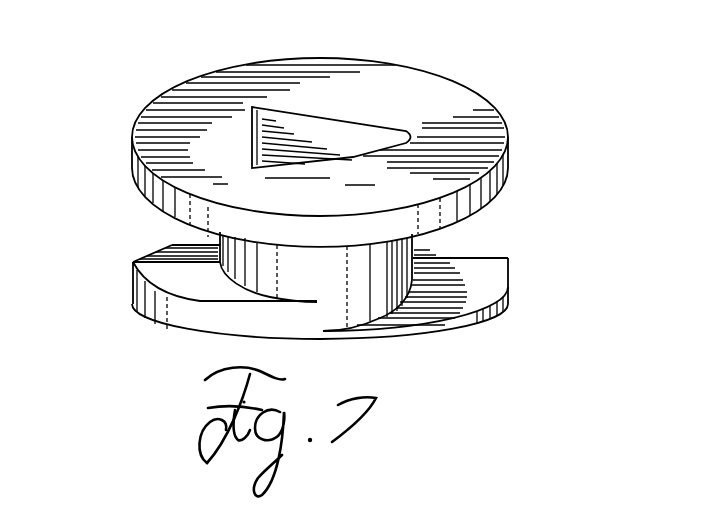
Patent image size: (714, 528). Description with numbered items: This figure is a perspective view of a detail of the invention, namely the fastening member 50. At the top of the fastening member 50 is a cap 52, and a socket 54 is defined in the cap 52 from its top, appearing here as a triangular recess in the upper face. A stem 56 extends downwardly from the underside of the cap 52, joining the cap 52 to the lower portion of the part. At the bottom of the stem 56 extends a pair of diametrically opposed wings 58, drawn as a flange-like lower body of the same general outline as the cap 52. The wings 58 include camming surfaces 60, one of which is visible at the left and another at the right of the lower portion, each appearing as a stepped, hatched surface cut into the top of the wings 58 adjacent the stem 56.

The fastening member 50 is at (193, 49).
The cap 52 is at (478, 130).
The socket 54 is at (365, 138).
The stem 56 is at (377, 273).
The wings 58 is at (512, 284).
The camming surfaces 60 is at (171, 253).